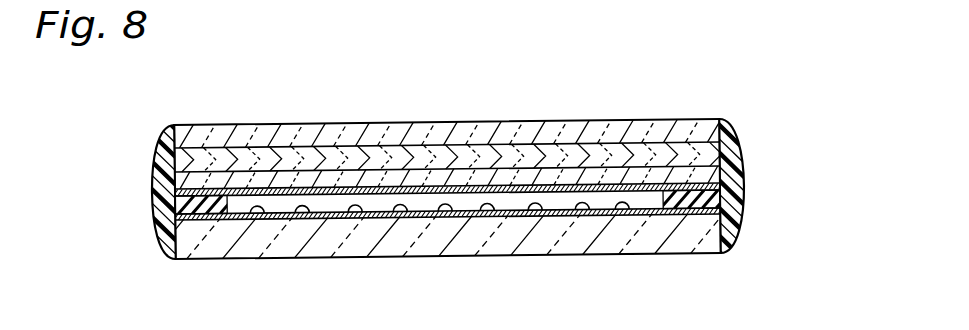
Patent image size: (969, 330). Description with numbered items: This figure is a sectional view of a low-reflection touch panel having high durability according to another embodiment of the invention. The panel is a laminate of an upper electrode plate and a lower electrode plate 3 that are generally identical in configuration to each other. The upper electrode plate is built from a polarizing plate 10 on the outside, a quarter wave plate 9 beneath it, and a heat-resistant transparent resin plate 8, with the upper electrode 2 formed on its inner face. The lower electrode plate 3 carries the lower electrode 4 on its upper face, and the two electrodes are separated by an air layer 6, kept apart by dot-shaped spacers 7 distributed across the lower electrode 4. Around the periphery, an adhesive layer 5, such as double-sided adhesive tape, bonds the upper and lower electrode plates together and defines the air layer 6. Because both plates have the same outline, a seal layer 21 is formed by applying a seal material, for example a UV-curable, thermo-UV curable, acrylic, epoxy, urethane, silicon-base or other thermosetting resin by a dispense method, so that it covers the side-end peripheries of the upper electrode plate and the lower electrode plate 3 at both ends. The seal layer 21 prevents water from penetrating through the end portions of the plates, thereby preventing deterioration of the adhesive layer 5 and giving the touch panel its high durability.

The upper electrode 2 is at (449, 186).
The lower electrode plate 3 is at (542, 237).
The lower electrode 4 is at (433, 216).
The adhesive layer 5 is at (183, 207).
The air layer 6 is at (283, 200).
The spacer 7 is at (398, 213).
The heat-resistant transparent resin plate 8 is at (682, 172).
The quarter wave plate 9 is at (634, 154).
The polarizing plate 10 is at (585, 136).
The seal layer 21 is at (155, 162).